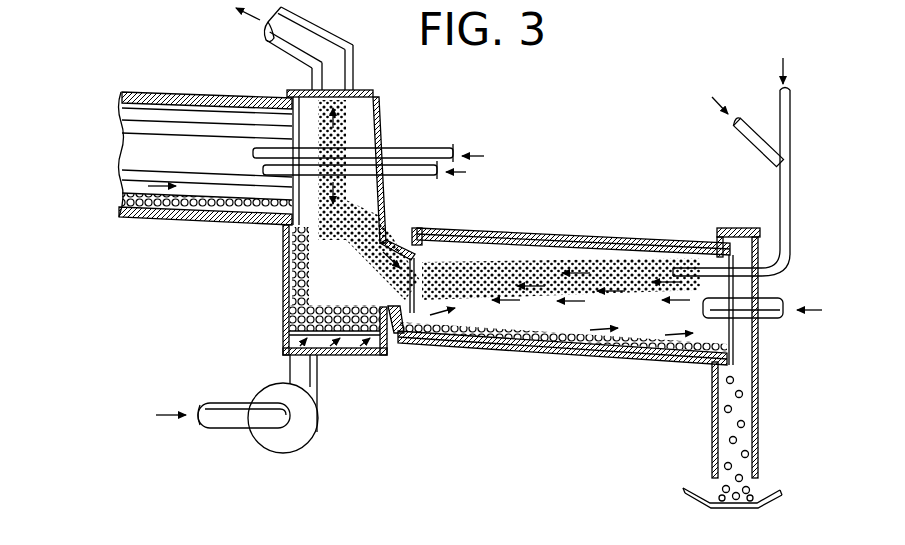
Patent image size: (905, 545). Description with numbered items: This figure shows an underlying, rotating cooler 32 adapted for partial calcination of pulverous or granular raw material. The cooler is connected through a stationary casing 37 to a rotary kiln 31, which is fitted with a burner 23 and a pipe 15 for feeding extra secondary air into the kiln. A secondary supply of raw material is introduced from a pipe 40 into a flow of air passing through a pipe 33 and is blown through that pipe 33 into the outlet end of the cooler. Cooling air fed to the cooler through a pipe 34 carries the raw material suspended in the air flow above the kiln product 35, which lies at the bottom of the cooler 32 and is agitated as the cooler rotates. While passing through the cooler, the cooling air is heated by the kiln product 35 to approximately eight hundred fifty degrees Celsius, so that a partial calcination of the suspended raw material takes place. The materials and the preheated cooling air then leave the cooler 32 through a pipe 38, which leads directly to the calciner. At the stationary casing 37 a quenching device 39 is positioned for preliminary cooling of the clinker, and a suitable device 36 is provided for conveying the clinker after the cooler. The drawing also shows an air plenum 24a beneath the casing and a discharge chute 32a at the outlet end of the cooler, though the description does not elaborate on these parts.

The pipe 15 is at (404, 176).
The burner 23 is at (372, 148).
The air plenum 24a is at (283, 345).
The rotary kiln 31 is at (181, 84).
The rotating cooler 32 is at (580, 226).
The discharge chute 32a is at (760, 416).
The pipe 33 is at (780, 190).
The pipe 34 is at (769, 316).
The kiln product 35 is at (206, 194).
The conveying device 36 is at (692, 497).
The stationary casing 37 is at (378, 112).
The pipe 38 is at (318, 30).
The quenching device 39 is at (306, 420).
The pipe 40 is at (752, 143).